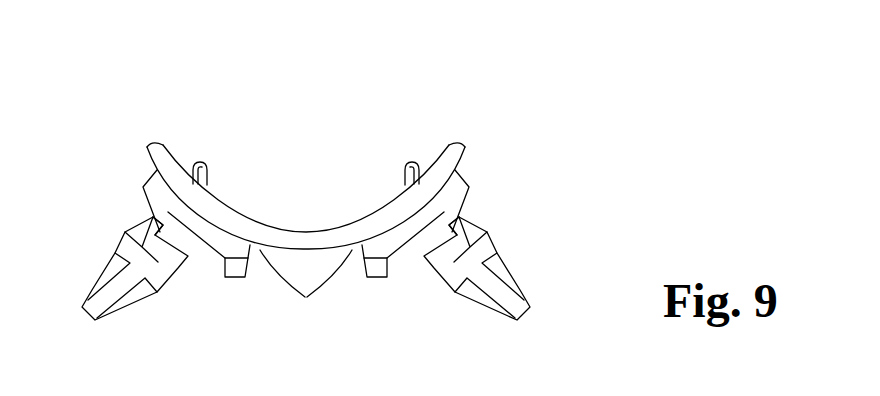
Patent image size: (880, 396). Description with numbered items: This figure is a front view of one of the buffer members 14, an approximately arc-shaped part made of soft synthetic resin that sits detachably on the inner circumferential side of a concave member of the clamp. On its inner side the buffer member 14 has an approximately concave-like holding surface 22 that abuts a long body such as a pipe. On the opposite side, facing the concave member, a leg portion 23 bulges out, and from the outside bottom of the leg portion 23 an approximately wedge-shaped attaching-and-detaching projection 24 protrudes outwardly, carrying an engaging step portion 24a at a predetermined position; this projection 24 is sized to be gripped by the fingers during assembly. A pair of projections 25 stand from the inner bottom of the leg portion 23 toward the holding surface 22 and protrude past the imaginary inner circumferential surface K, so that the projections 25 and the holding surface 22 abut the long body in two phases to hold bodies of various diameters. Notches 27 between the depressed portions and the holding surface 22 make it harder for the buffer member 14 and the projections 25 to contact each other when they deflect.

The buffer member 14 is at (325, 49).
The holding surface 22 is at (237, 212).
The leg portion 23 is at (204, 256).
The attaching-and-detaching projection 24 is at (120, 287).
The engaging step portion 24a is at (142, 232).
The projection 25 is at (207, 172).
The notch 27 is at (358, 259).
The imaginary inner circumferential surface K is at (312, 232).